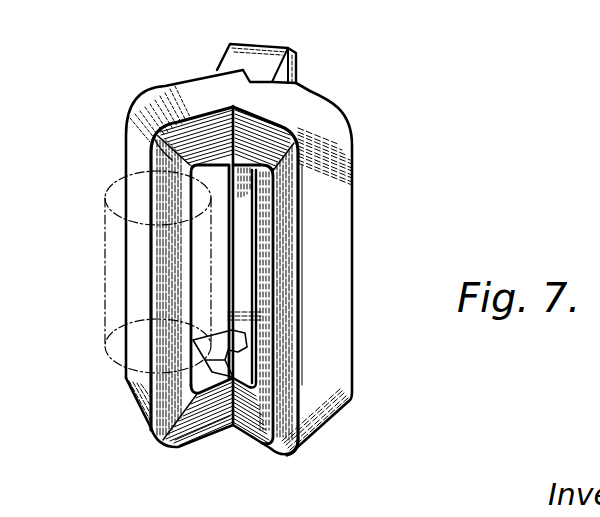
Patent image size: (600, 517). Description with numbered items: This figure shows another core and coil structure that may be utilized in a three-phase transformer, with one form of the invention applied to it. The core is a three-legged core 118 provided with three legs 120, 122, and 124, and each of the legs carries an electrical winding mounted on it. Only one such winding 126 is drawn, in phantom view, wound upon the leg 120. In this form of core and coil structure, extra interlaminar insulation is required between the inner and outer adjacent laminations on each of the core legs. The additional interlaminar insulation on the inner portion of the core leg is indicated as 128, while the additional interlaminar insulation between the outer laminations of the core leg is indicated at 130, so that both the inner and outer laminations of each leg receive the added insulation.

The three-legged core 118 is at (208, 70).
The leg 120 is at (192, 439).
The leg 122 is at (337, 421).
The leg 124 is at (289, 48).
The electrical winding 126 is at (108, 300).
The additional interlaminar insulation on inner portion of core leg 128 is at (212, 235).
The additional interlaminar insulation between outer laminations of core leg 130 is at (169, 165).